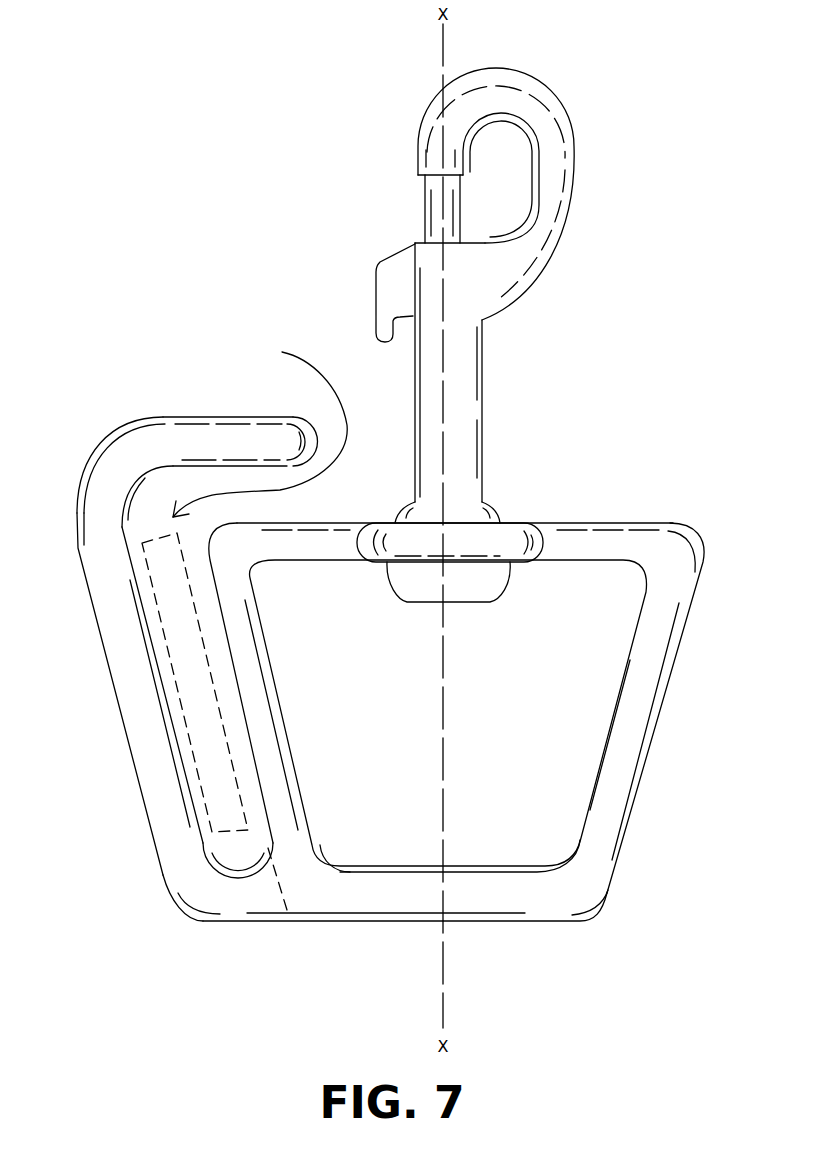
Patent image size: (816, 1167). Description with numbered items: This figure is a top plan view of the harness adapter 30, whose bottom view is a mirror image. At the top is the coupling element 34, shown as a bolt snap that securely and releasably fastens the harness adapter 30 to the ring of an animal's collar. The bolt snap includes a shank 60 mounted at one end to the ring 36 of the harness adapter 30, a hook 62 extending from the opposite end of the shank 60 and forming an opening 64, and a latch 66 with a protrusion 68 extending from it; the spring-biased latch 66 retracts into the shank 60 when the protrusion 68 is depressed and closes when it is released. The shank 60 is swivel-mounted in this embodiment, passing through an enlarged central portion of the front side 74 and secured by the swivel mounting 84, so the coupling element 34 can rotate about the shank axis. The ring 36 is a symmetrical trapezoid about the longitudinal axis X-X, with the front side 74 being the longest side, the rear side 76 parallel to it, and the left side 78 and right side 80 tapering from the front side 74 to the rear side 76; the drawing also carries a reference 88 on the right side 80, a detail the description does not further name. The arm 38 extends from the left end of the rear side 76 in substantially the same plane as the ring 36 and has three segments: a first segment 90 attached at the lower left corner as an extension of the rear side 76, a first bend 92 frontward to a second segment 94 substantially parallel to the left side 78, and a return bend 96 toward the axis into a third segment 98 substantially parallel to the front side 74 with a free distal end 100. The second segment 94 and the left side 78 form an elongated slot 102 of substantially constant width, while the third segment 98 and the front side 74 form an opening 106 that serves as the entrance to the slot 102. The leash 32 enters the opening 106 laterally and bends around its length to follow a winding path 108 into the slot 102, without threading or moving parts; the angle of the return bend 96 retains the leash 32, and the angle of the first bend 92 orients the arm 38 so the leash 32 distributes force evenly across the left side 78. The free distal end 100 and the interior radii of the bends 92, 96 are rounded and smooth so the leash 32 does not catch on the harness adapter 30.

The harness adapter 30 is at (632, 113).
The leash 32 is at (207, 858).
The coupling element 34 is at (578, 186).
The ring 36 is at (610, 513).
The arm 38 is at (75, 522).
The shank 60 is at (470, 401).
The hook 62 is at (527, 88).
The opening 64 is at (537, 170).
The latch 66 is at (437, 203).
The protrusion 68 is at (380, 292).
The front side 74 is at (532, 537).
The rear side 76 is at (510, 912).
The left side 78 is at (296, 706).
The right side 80 is at (645, 705).
The swivel mounting 84 is at (403, 598).
The inner surface 88 is at (597, 760).
The first segment 90 is at (235, 910).
The first bend 92 is at (188, 895).
The second segment 94 is at (140, 748).
The return bend 96 is at (100, 480).
The third segment 98 is at (188, 427).
The free distal end 100 is at (317, 440).
The slot 102 is at (177, 687).
The opening 106 is at (303, 522).
The winding path 108 is at (345, 400).